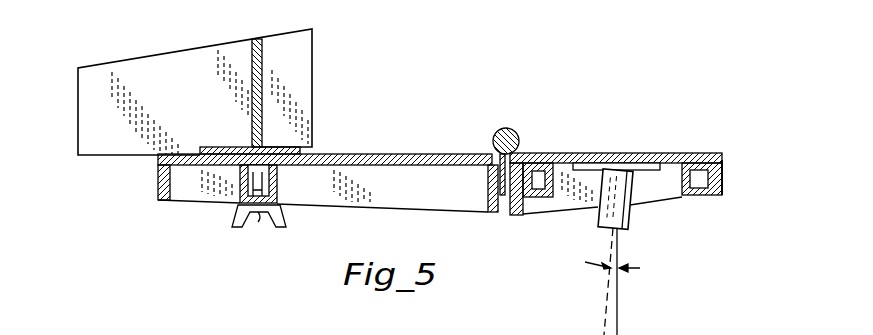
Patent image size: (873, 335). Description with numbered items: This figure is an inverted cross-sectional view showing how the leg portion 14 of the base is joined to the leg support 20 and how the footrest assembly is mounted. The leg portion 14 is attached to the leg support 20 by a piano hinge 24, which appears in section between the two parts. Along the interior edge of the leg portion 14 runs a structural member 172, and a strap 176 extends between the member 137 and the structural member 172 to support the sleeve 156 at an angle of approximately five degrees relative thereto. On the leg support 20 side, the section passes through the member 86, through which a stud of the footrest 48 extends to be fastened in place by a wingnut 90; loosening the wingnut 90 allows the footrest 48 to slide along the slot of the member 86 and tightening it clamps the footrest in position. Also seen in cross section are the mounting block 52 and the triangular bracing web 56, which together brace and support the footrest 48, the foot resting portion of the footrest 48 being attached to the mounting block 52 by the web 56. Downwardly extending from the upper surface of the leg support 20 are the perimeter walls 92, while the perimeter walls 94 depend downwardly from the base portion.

The leg portion 14 is at (626, 124).
The leg support 20 is at (367, 150).
The piano hinge 24 is at (508, 128).
The footrest 48 is at (266, 30).
The mounting block 52 is at (226, 147).
The triangular bracing web 56 is at (253, 41).
The member 86 is at (278, 190).
The wingnut 90 is at (236, 222).
The perimeter walls 92 is at (495, 214).
The perimeter walls 94 is at (722, 187).
The member 137 is at (540, 164).
The sleeve 156 is at (632, 212).
The structural member 172 is at (702, 160).
The strap 176 is at (660, 153).